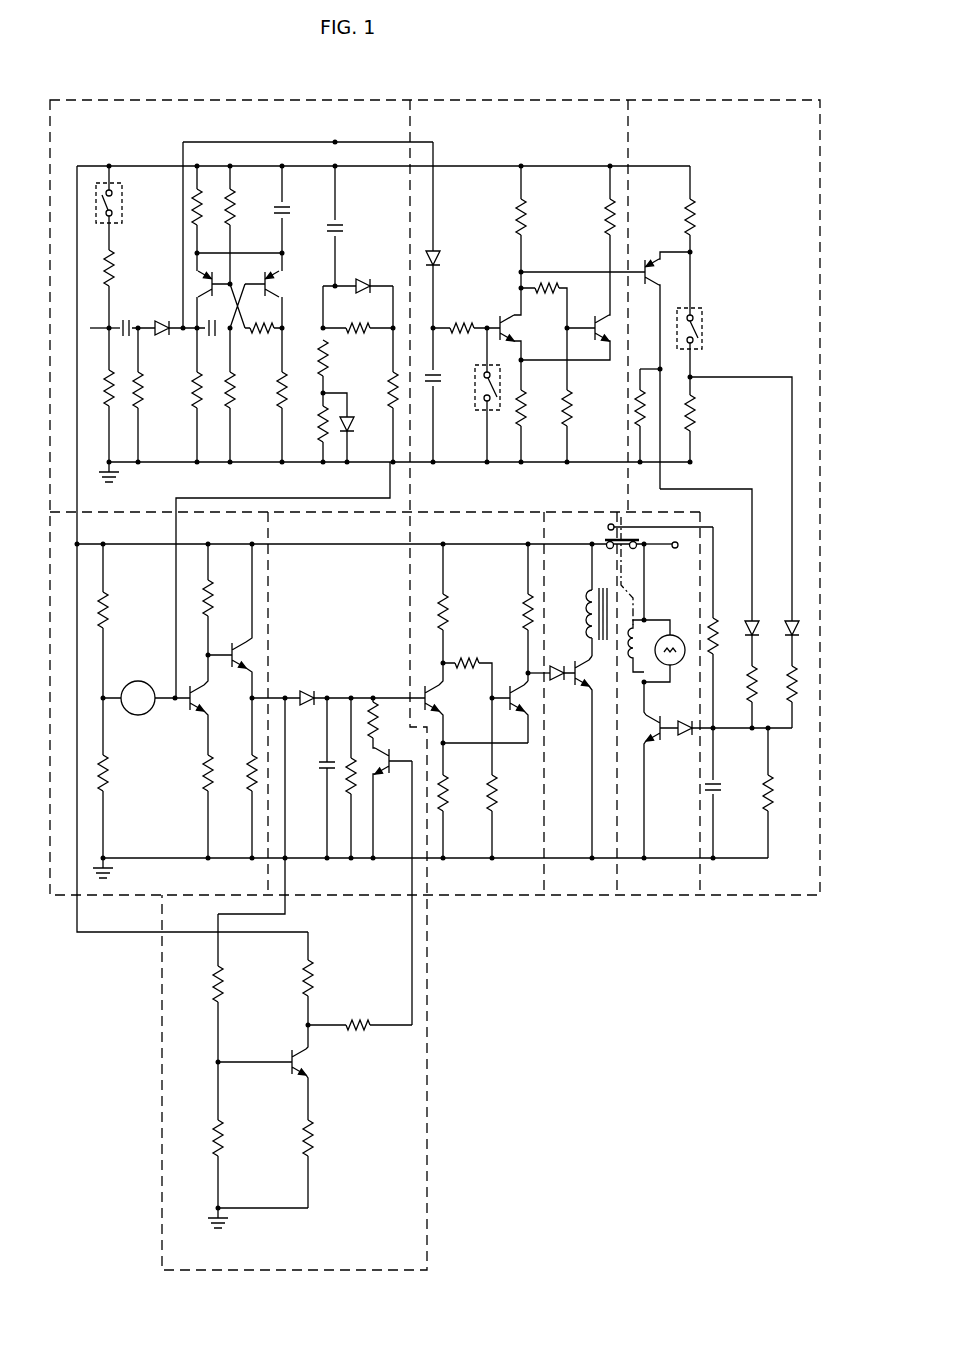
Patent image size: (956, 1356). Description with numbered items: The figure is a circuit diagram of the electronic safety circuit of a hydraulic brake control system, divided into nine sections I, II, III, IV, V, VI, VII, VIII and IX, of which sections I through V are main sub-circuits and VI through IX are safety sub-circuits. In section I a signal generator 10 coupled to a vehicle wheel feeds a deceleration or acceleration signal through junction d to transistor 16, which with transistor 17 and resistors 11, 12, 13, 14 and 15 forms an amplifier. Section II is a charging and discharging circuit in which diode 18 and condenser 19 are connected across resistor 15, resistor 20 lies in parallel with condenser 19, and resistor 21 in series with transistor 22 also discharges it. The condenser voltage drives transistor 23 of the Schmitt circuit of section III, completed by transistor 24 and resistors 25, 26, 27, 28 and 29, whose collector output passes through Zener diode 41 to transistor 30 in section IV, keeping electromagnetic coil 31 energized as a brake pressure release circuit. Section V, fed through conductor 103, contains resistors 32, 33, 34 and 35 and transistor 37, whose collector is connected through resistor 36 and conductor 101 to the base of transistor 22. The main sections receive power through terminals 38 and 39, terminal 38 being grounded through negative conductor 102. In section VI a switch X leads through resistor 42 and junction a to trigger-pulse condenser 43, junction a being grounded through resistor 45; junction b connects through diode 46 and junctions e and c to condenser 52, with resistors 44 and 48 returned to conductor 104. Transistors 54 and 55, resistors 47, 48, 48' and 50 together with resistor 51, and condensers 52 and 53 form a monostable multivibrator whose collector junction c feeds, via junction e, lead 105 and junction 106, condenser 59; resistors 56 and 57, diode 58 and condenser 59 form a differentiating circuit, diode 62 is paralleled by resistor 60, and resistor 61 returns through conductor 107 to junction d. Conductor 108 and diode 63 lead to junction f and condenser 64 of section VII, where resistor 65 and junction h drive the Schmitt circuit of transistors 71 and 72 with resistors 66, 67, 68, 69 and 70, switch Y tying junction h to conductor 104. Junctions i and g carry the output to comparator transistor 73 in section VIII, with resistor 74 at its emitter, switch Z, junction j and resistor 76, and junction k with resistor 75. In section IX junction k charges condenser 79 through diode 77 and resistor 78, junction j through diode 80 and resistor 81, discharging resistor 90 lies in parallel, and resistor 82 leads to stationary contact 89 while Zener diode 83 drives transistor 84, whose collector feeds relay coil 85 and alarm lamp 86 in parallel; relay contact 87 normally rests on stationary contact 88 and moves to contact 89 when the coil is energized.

The signal generator 10 is at (137, 681).
The resistor 11 is at (108, 612).
The resistor 12 is at (108, 800).
The resistor 13 is at (212, 598).
The resistor 14 is at (200, 775).
The resistor 15 is at (248, 776).
The transistor 16 is at (186, 716).
The transistor 17 is at (248, 650).
The diode 18 is at (308, 690).
The condenser 19 is at (322, 765).
The resistor 20 is at (345, 780).
The resistor 21 is at (378, 724).
The transistor 22 is at (385, 778).
The transistor 23 is at (440, 700).
The transistor 24 is at (524, 700).
The resistor 25 is at (448, 616).
The resistor 26 is at (448, 796).
The resistor 27 is at (462, 660).
The resistor 28 is at (498, 796).
The resistor 29 is at (522, 620).
The transistor 30 is at (591, 680).
The electromagnetic coil 31 is at (590, 612).
The resistor 32 is at (212, 985).
The resistor 33 is at (212, 1142).
The resistor 34 is at (312, 975).
The resistor 35 is at (313, 1140).
The resistor 36 is at (372, 1035).
The transistor 37 is at (302, 1064).
The terminal 38 is at (713, 860).
The terminal 39 is at (675, 549).
The Zener diode 41 is at (556, 665).
The resistor 42 is at (112, 268).
The condenser 43 is at (125, 320).
The resistor 44 is at (143, 396).
The resistor 45 is at (111, 382).
The diode 46 is at (160, 320).
The resistor 47 is at (233, 395).
The resistor 48 is at (180, 395).
The resistor 48' is at (266, 392).
The resistor 50 is at (208, 209).
The resistor 51 is at (246, 224).
The condenser 52 is at (207, 322).
The condenser 53 is at (291, 210).
The transistor 54 is at (205, 280).
The transistor 55 is at (282, 283).
The resistor 56 is at (330, 354).
The resistor 57 is at (318, 428).
The diode 58 is at (351, 425).
The condenser 59 is at (343, 228).
The resistor 60 is at (350, 326).
The resistor 61 is at (388, 394).
The diode 62 is at (358, 283).
The diode 63 is at (440, 256).
The condenser 64 is at (438, 376).
The resistor 65 is at (457, 322).
The resistor 66 is at (528, 222).
The resistor 67 is at (607, 222).
The resistor 68 is at (538, 296).
The resistor 69 is at (527, 410).
The resistor 70 is at (573, 408).
The transistor 71 is at (518, 331).
The transistor 72 is at (614, 327).
The transistor 73 is at (655, 270).
The resistor 74 is at (694, 216).
The resistor 75 is at (637, 414).
The resistor 76 is at (694, 412).
The diode 77 is at (756, 622).
The resistor 78 is at (748, 684).
The condenser 79 is at (720, 790).
The diode 80 is at (788, 636).
The resistor 81 is at (785, 690).
The resistor 82 is at (716, 630).
The Zener diode 83 is at (686, 737).
The transistor 84 is at (650, 742).
The relay coil 85 is at (645, 680).
The alarm lamp 86 is at (675, 636).
The relay contact 87 is at (622, 519).
The stationary contact 88 is at (590, 552).
The stationary contact 89 is at (606, 529).
The discharging resistor 90 is at (773, 790).
The conductor 101 is at (414, 955).
The common negative conductor 102 is at (556, 860).
The conductor 103 is at (287, 805).
The conductor 104 is at (262, 463).
The lead 105 is at (272, 141).
The junction 106 is at (336, 140).
The conductor 107 is at (323, 498).
The conductor 108 is at (434, 205).
The switch X is at (124, 208).
The switch Y is at (472, 405).
The switch Z is at (704, 328).
The junction a is at (101, 313).
The junction b is at (139, 331).
The junction c is at (212, 334).
The junction d is at (176, 695).
The junction e is at (179, 249).
The junction f is at (436, 322).
The junction g is at (517, 272).
The junction h is at (484, 333).
The junction i is at (516, 289).
The junction j is at (694, 375).
The junction k is at (657, 366).
The first sub-circuit I is at (128, 898).
The sub-circuit II is at (338, 898).
The sub-circuit III is at (480, 898).
The section IV is at (572, 898).
The section V is at (427, 1045).
The section VI is at (205, 99).
The seventh section VII is at (527, 99).
The section VIII is at (712, 99).
The section IX is at (651, 898).